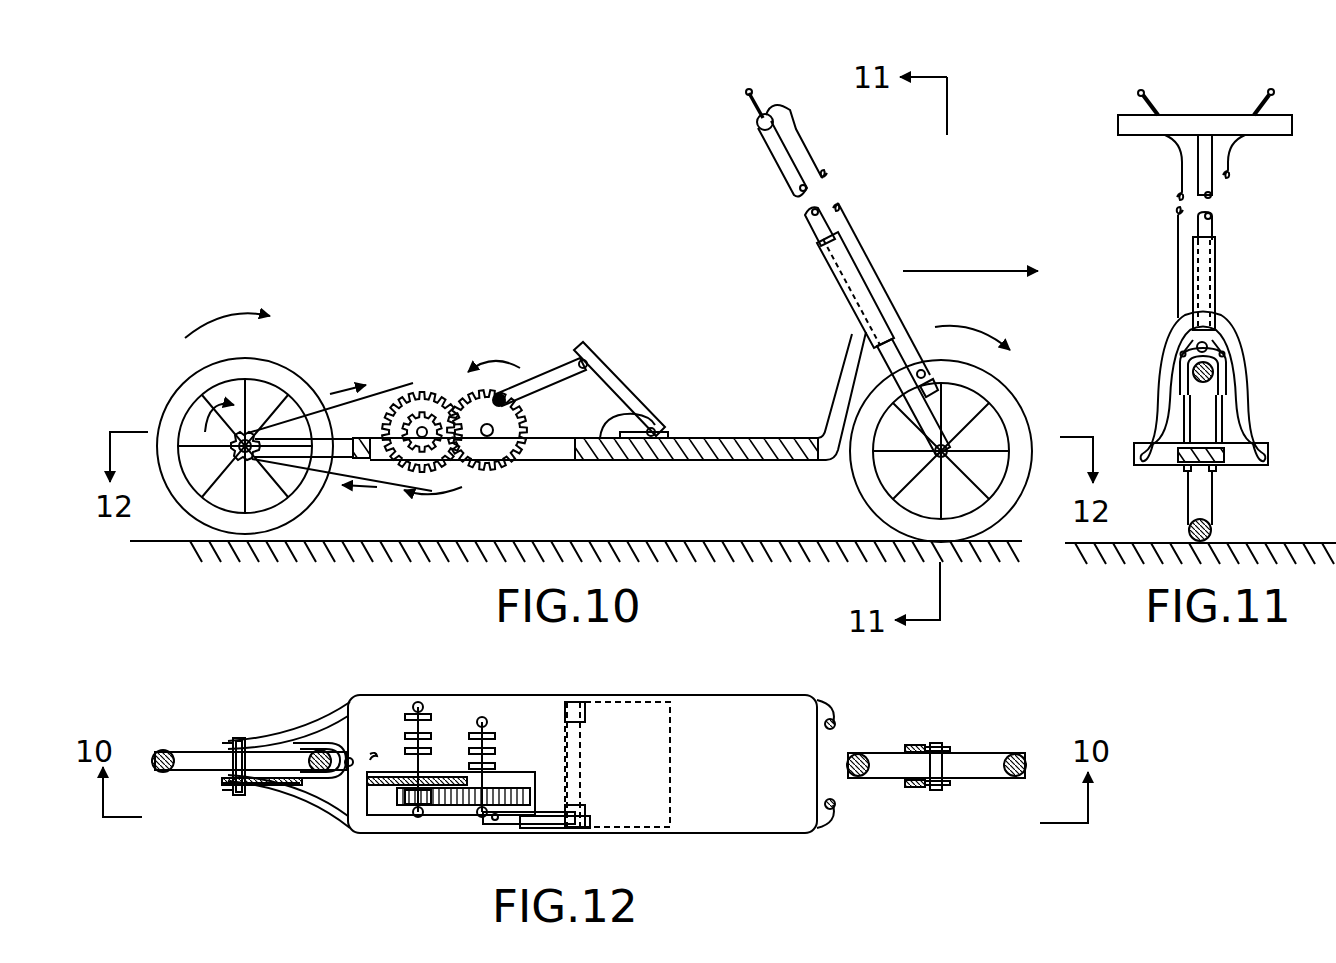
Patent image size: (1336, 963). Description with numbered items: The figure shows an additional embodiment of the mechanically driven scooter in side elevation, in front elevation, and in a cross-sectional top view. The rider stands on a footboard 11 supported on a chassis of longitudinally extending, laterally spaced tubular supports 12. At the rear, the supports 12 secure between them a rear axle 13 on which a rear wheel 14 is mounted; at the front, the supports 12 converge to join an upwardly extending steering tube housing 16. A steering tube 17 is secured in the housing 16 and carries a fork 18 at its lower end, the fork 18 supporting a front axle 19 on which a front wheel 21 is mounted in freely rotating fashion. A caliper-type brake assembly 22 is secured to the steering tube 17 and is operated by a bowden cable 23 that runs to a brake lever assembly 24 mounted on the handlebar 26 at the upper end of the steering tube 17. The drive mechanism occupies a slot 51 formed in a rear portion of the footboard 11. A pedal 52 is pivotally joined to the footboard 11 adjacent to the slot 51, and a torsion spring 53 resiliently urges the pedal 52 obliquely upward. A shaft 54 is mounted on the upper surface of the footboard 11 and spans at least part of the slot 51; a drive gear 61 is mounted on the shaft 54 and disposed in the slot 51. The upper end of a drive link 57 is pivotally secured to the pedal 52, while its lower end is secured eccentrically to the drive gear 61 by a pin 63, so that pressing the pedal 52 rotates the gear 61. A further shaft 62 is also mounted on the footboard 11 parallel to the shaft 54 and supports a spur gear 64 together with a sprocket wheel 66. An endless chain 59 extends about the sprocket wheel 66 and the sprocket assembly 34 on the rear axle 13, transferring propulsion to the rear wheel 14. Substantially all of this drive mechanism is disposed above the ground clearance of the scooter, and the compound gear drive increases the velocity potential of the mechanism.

In FIG. 10, the footboard 11 is at (755, 438).
In FIG. 12, the footboard 11 is at (582, 764).
In FIG. 10, the tubular supports 12 is at (265, 438).
In FIG. 12, the tubular supports 12 is at (276, 738).
In FIG. 12, the rear axle 13 is at (228, 768).
In FIG. 10, the rear wheel 14 is at (186, 373).
In FIG. 12, the rear wheel 14 is at (160, 752).
In FIG. 10, the steering tube housing 16 is at (860, 241).
In FIG. 11, the steering tube housing 16 is at (1216, 283).
In FIG. 10, the steering tube 17 is at (781, 168).
In FIG. 11, the steering tube 17 is at (1215, 193).
In FIG. 12, the fork 18 is at (912, 745).
In FIG. 11, the front axle 19 is at (1213, 500).
In FIG. 12, the front axle 19 is at (940, 765).
In FIG. 10, the front wheel 21 is at (858, 490).
In FIG. 11, the front wheel 21 is at (1211, 526).
In FIG. 12, the front wheel 21 is at (985, 753).
In FIG. 10, the brake assembly 22 is at (910, 356).
In FIG. 11, the brake assembly 22 is at (1222, 368).
In FIG. 10, the bowden cable 23 is at (808, 137).
In FIG. 11, the bowden cable 23 is at (1181, 176).
In FIG. 10, the brake lever assembly 24 is at (762, 94).
In FIG. 11, the brake lever assembly 24 is at (1152, 105).
In FIG. 10, the handlebar 26 is at (757, 121).
In FIG. 11, the handlebar 26 is at (1219, 115).
In FIG. 10, the sprocket assembly 34 is at (232, 440).
In FIG. 12, the sprocket assembly 34 is at (224, 790).
In FIG. 10, the slot 51 is at (551, 462).
In FIG. 12, the slot 51 is at (388, 818).
In FIG. 10, the pedal 52 is at (607, 355).
In FIG. 12, the pedal 52 is at (672, 775).
In FIG. 10, the torsion spring 53 is at (620, 462).
In FIG. 10, the shaft 54 is at (490, 438).
In FIG. 12, the shaft 54 is at (480, 718).
In FIG. 10, the drive link 57 is at (560, 364).
In FIG. 12, the drive link 57 is at (535, 826).
In FIG. 10, the endless chain 59 is at (272, 466).
In FIG. 12, the endless chain 59 is at (292, 790).
In FIG. 10, the drive gear 61 is at (518, 463).
In FIG. 12, the drive gear 61 is at (452, 805).
In FIG. 12, the further shaft 62 is at (418, 702).
In FIG. 10, the pin 63 is at (499, 394).
In FIG. 12, the pin 63 is at (494, 822).
In FIG. 10, the spur gear 64 is at (428, 425).
In FIG. 12, the spur gear 64 is at (406, 806).
In FIG. 10, the sprocket wheel 66 is at (418, 406).
In FIG. 12, the sprocket wheel 66 is at (390, 777).